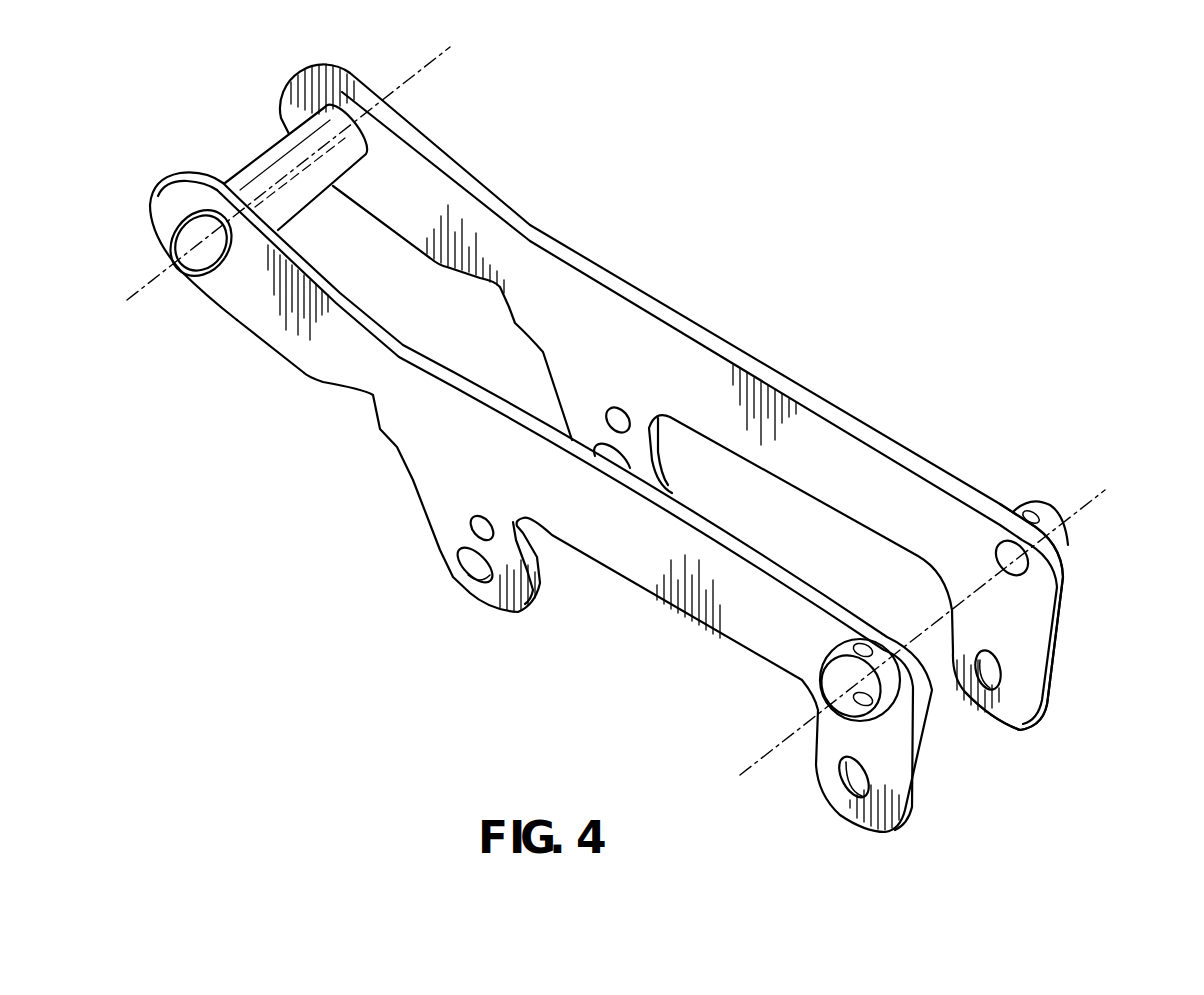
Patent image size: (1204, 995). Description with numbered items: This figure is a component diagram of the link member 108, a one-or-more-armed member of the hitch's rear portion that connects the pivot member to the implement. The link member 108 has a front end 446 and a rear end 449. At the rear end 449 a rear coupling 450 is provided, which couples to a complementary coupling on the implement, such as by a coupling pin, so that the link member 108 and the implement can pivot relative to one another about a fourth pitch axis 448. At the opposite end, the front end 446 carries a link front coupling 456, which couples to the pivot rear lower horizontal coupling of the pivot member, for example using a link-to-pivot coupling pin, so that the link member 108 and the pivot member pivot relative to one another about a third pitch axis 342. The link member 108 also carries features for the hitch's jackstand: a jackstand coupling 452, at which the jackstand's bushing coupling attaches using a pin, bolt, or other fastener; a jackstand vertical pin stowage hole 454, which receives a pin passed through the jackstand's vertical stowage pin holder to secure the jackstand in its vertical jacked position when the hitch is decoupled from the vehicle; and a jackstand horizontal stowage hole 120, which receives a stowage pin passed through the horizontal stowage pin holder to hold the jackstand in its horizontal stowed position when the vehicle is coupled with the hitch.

The link member 108 is at (368, 382).
The rear end 449 is at (195, 151).
The rear coupling 450 is at (248, 170).
The fourth pitch axis 448 is at (435, 66).
The third pitch axis 342 is at (1108, 488).
The front end 446 is at (1090, 590).
The link front coupling 456 is at (885, 675).
The jackstand horizontal stowage hole 120 is at (1002, 679).
The jackstand coupling 452 is at (468, 532).
The jackstand vertical pin stowage hole 454 is at (478, 584).